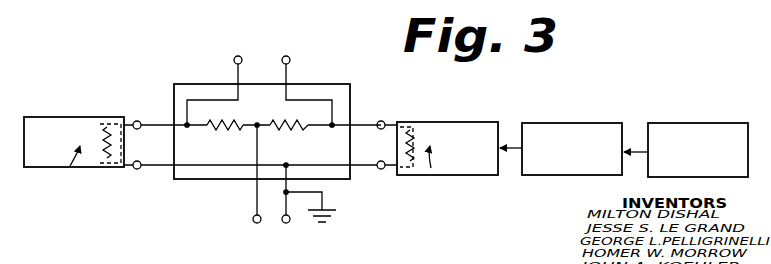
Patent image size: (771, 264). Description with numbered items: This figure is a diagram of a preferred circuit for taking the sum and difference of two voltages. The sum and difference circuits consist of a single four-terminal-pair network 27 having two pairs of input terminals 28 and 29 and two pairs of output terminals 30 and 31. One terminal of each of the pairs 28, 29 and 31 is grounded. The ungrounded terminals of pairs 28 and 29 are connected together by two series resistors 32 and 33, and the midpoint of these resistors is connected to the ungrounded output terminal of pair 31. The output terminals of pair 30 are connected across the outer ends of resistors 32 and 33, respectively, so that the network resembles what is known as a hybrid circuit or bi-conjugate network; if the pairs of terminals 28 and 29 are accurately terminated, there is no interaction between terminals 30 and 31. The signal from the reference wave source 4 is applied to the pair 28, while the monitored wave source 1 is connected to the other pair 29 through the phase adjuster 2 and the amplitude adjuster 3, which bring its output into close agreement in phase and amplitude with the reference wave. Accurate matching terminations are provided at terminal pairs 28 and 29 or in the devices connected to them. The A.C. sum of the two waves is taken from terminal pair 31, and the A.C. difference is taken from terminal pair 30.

The monitored wave source 1 is at (705, 112).
The phase adjuster 2 is at (584, 123).
The amplitude adjuster 3 is at (443, 131).
The reference wave source 4 is at (78, 117).
The four-terminal-pair network 27 is at (354, 100).
The input terminals 28 is at (140, 130).
The input terminals 29 is at (381, 130).
The output terminals 30 is at (262, 61).
The output terminals 31 is at (272, 220).
The series resistor 32 is at (232, 130).
The series resistor 33 is at (290, 131).